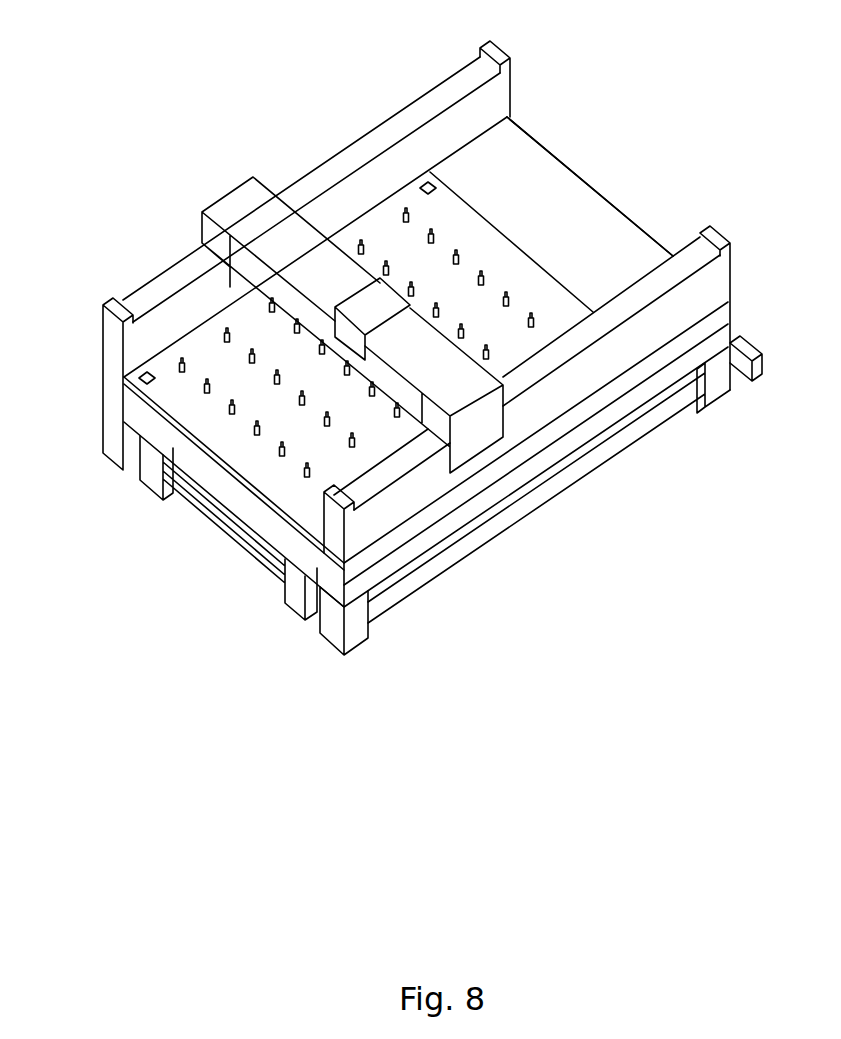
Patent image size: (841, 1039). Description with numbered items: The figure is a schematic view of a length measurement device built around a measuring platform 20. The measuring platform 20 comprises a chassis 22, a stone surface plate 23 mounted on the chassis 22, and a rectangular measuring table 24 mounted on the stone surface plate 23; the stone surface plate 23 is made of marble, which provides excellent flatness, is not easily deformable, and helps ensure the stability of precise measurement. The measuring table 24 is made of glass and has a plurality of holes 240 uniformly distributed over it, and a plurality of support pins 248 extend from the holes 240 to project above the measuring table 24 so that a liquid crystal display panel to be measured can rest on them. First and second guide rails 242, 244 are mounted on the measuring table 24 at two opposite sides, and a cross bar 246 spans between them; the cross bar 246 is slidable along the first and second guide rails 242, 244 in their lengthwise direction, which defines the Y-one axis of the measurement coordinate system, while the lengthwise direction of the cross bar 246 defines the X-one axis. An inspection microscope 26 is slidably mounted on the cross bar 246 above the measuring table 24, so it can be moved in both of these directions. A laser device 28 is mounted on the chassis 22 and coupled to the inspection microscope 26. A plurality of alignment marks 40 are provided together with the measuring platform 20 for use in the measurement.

The measuring platform 20 is at (403, 372).
The chassis 22 is at (352, 617).
The stone surface plate 23 is at (572, 220).
The measuring table 24 is at (518, 340).
The inspection microscope 26 is at (347, 360).
The laser device 28 is at (755, 368).
The alignment marks 40 is at (139, 378).
The holes 240 is at (280, 457).
The first guide rail 242 is at (168, 287).
The second guide rail 244 is at (425, 480).
The cross bar 246 is at (272, 217).
The support pins 248 is at (282, 453).